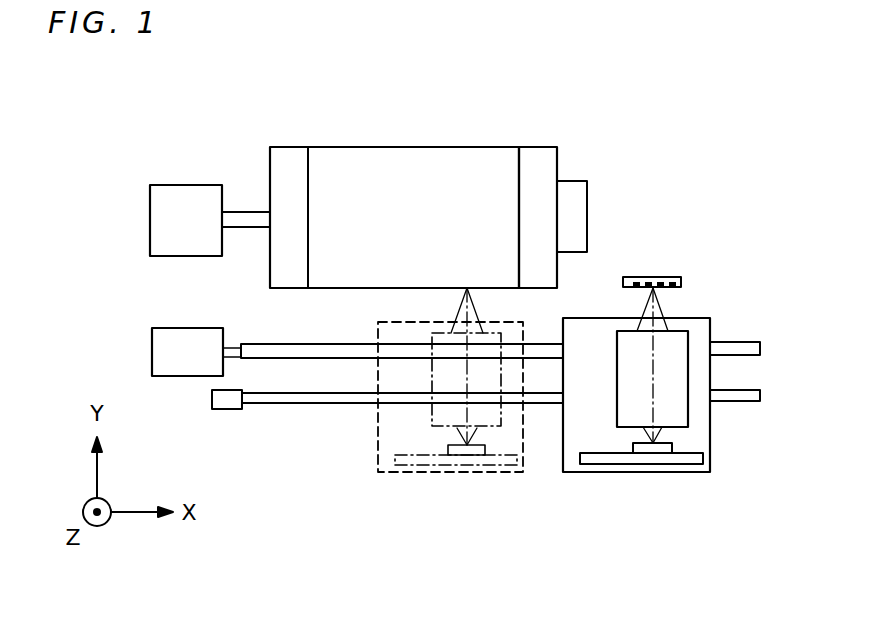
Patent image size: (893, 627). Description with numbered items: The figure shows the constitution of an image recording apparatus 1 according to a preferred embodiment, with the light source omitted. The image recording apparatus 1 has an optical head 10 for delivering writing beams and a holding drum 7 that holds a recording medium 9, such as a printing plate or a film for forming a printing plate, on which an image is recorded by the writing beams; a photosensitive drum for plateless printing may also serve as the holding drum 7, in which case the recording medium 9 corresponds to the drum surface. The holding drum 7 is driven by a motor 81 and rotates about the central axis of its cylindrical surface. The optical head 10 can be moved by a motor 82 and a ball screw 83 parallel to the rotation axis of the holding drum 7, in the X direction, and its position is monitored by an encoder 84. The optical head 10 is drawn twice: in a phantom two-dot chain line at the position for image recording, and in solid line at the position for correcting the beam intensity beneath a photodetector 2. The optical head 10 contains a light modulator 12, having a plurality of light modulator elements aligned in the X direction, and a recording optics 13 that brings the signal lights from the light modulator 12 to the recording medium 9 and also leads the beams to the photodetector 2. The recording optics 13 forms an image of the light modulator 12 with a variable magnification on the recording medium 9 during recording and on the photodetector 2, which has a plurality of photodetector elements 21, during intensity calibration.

The image recording apparatus 1 is at (170, 117).
The photodetector 2 is at (662, 277).
The photodetector elements 21 is at (673, 288).
The holding drum 7 is at (537, 147).
The recording medium 9 is at (450, 147).
The optical head 10 is at (378, 447).
The light modulator 12 is at (640, 443).
The recording optics 13 is at (688, 343).
The motor 81 is at (170, 185).
The motor 82 is at (167, 328).
The ball screw 83 is at (312, 344).
The encoder 84 is at (226, 409).